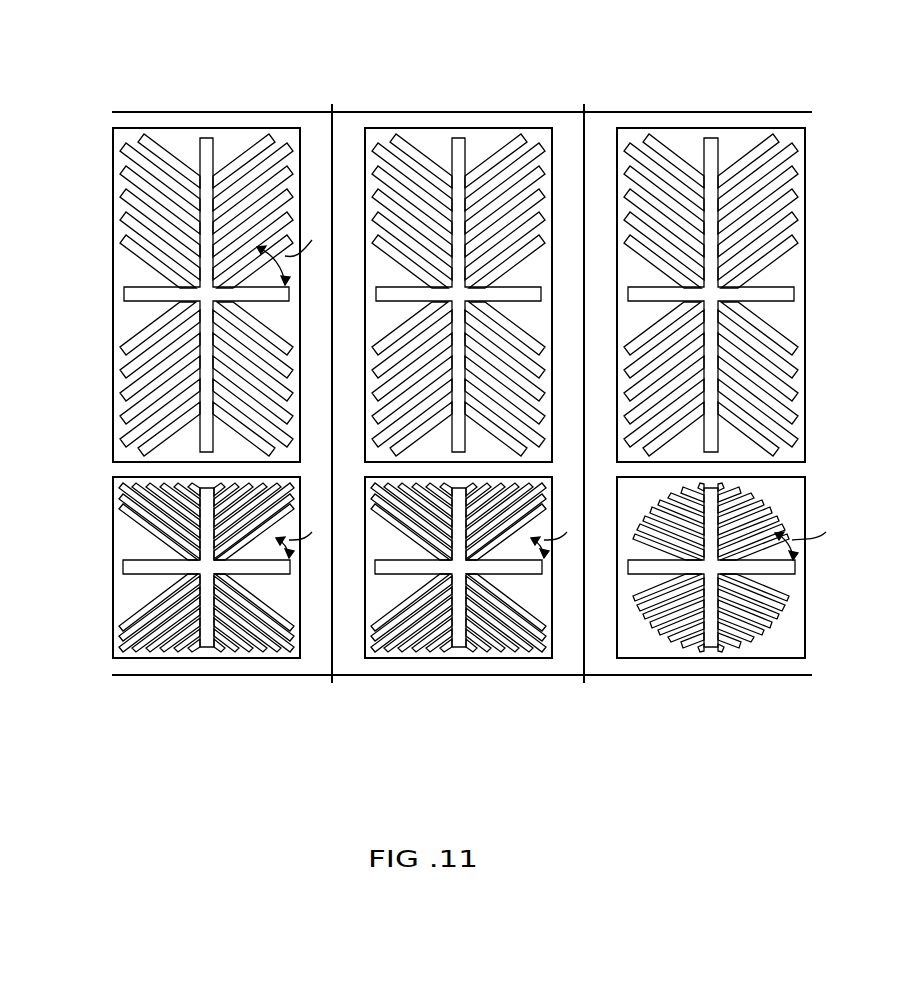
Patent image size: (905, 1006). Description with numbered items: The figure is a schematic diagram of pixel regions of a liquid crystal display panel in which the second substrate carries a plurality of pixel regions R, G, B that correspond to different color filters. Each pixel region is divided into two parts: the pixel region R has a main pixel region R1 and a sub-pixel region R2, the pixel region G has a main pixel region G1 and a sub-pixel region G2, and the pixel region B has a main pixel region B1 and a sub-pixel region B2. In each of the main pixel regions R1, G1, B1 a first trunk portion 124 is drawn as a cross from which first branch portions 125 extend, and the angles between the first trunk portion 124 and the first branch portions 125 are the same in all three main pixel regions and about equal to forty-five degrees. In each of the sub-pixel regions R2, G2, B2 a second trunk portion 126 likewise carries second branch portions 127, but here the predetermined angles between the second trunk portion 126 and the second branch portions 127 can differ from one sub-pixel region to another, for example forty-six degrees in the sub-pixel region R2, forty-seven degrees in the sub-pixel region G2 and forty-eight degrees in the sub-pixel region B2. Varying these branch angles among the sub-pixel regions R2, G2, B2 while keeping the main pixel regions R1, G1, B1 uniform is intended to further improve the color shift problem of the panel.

The first trunk portion 124 is at (213, 136).
The first branch portions 125 is at (128, 216).
The second trunk portion 126 is at (123, 567).
The second branch portions 127 is at (118, 510).
The main pixel region R1 is at (138, 112).
The main pixel region G1 is at (390, 112).
The main pixel region B1 is at (640, 112).
The sub-pixel region R2 is at (135, 662).
The sub-pixel region G2 is at (385, 662).
The sub-pixel region B2 is at (640, 662).
The pixel region R is at (272, 102).
The pixel region G is at (514, 102).
The pixel region B is at (773, 102).